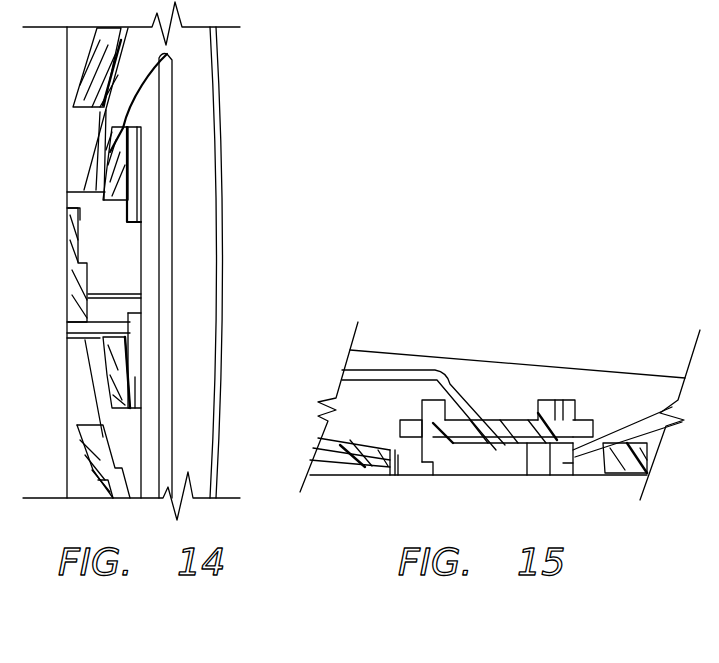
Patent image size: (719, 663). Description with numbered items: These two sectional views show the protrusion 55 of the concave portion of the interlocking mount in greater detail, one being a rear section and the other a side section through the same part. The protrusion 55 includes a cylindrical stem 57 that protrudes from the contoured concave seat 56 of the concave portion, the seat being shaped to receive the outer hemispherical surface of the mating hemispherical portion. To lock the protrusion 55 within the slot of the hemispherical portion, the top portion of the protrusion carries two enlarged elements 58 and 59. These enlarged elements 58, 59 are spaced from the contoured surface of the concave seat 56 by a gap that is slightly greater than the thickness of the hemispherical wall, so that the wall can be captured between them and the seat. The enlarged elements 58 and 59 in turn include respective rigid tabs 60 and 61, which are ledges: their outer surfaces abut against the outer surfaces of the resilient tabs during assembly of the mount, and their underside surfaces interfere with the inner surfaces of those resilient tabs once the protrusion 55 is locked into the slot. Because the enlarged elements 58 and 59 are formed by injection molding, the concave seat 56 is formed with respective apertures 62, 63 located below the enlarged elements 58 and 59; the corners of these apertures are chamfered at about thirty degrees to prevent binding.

In FIG. 14, the protrusion 55 is at (192, 208).
In FIG. 15, the protrusion 55 is at (495, 390).
In FIG. 14, the concave seat 56 is at (118, 35).
In FIG. 15, the concave seat 56 is at (647, 445).
In FIG. 14, the cylindrical stem 57 is at (128, 263).
In FIG. 15, the cylindrical stem 57 is at (473, 460).
In FIG. 14, the enlarged element 58 is at (140, 155).
In FIG. 14, the enlarged element 59 is at (135, 360).
In FIG. 15, the rigid tab 60 is at (407, 418).
In FIG. 15, the rigid tab 61 is at (587, 417).
In FIG. 14, the aperture 62 is at (97, 150).
In FIG. 15, the aperture 62 is at (410, 475).
In FIG. 14, the aperture 63 is at (100, 382).